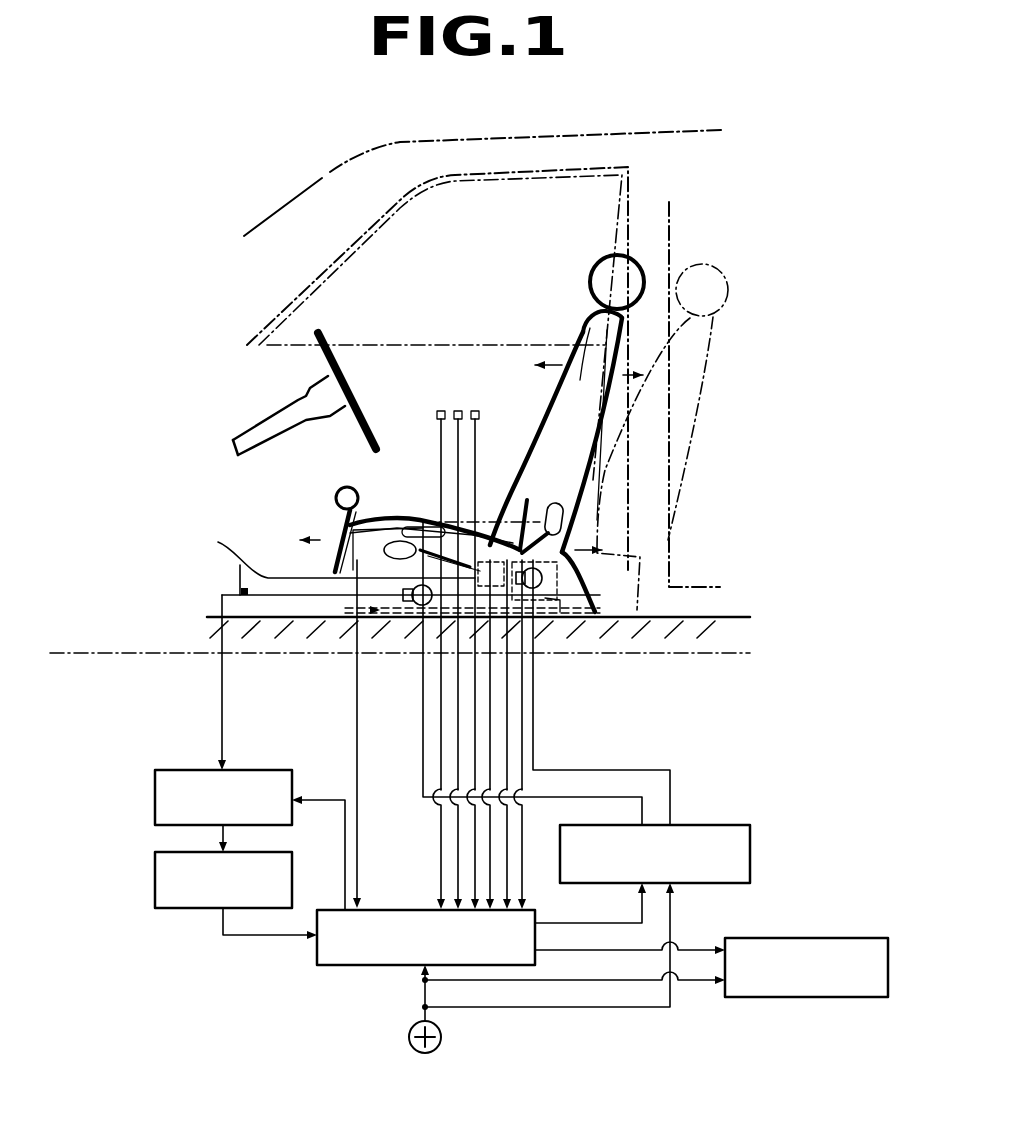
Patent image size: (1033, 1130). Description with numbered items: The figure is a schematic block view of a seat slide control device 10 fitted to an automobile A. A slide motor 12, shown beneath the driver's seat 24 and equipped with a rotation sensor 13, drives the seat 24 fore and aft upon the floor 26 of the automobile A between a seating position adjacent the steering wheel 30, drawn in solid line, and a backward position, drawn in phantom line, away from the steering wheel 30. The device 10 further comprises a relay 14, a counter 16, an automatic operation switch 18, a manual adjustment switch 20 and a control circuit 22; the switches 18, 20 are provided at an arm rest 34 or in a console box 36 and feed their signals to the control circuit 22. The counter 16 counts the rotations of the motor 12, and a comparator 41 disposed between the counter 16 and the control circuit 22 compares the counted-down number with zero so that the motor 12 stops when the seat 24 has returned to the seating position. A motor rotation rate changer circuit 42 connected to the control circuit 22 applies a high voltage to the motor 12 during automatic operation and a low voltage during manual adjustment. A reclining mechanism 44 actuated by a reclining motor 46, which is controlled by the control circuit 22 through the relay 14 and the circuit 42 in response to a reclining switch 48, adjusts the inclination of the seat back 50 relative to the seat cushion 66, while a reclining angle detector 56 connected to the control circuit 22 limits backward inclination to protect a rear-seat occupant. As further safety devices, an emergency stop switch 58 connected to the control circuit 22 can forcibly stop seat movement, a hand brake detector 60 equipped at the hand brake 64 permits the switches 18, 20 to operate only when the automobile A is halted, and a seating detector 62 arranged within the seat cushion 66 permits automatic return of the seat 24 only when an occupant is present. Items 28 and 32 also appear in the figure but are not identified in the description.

The automobile A is at (623, 132).
The seat slide control device 10 is at (775, 755).
The slide motor 12 is at (427, 572).
The rotation sensor 13 is at (410, 606).
The relay 14 is at (870, 938).
The counter 16 is at (307, 777).
The automatic operation switch 18 is at (436, 412).
The manual adjustment switch 20 is at (457, 411).
The control circuit 22 is at (537, 915).
The driver's seat 24 is at (400, 513).
The floor 26 is at (708, 616).
The seat slide rail 28 is at (345, 612).
The steering wheel 30 is at (337, 356).
The instrument panel 32 is at (458, 345).
The arm rest 34 is at (566, 465).
The console box 36 is at (268, 580).
The comparator 41 is at (292, 870).
The motor rotation rate changer circuit 42 is at (753, 840).
The reclining mechanism 44 is at (555, 578).
The reclining motor 46 is at (563, 618).
The reclining switch 48 is at (479, 411).
The seat back 50 is at (594, 328).
The reclining angle detector 56 is at (552, 503).
The emergency stop switch 58 is at (533, 557).
The hand brake detector 60 is at (485, 557).
The seating detector 62 is at (423, 520).
The hand brake 64 is at (338, 535).
The seat cushion 66 is at (362, 492).